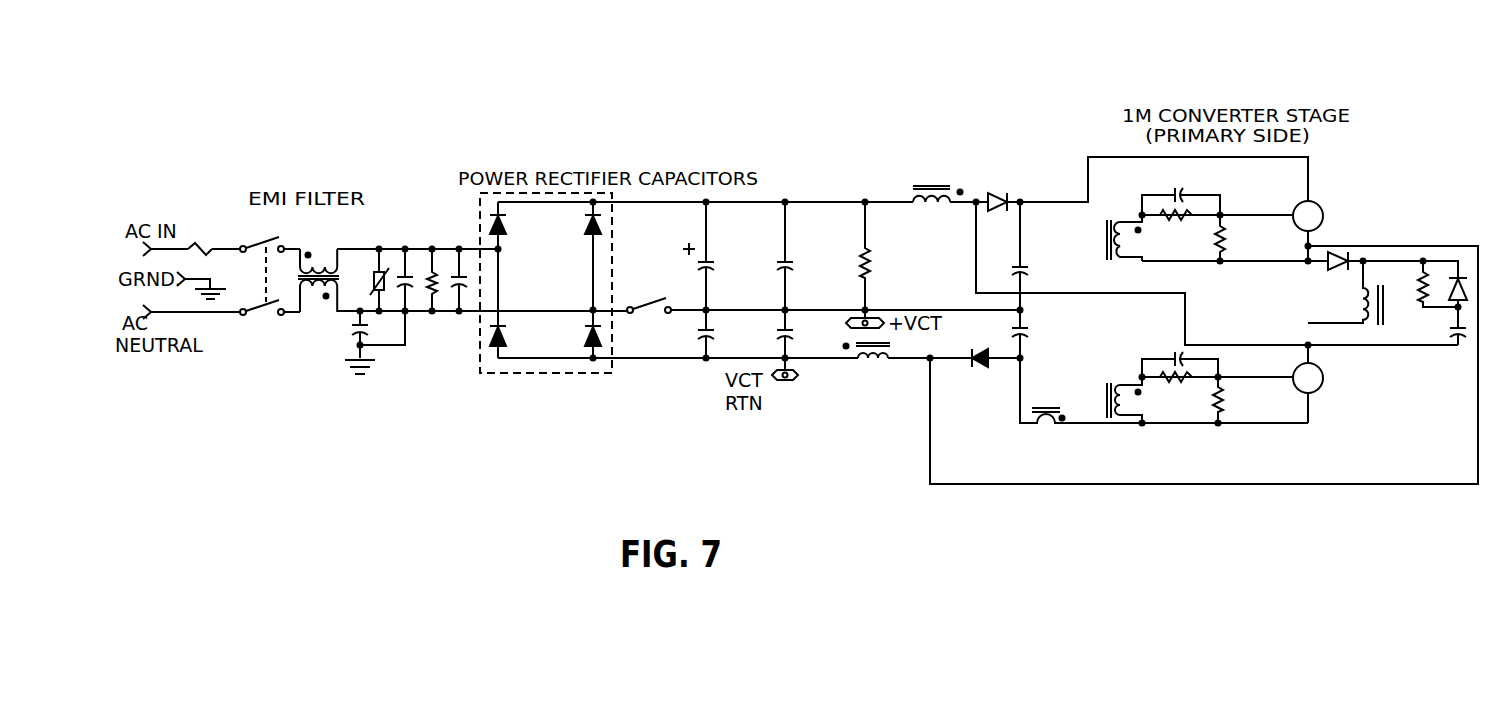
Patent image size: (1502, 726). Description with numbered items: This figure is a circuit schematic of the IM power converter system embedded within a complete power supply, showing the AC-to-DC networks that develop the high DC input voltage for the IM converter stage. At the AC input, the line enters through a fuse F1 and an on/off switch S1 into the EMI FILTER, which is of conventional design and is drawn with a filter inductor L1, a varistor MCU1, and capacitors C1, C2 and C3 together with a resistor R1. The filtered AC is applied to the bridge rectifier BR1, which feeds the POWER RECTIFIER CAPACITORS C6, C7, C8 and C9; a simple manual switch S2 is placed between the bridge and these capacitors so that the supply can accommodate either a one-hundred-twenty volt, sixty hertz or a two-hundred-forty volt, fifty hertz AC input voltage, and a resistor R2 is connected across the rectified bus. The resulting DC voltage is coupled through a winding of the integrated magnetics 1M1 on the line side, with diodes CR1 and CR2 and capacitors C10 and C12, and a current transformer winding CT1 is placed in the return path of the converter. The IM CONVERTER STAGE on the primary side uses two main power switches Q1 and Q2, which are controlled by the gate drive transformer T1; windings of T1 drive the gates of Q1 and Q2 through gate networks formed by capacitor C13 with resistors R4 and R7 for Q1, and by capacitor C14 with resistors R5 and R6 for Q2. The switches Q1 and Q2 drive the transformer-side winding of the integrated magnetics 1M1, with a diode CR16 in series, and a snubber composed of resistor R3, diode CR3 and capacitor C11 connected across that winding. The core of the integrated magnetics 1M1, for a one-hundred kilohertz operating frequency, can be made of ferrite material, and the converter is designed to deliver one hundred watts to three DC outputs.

The fuse F1 is at (203, 259).
The on/off power switch S1 is at (280, 277).
The EMI filter inductor L1 is at (330, 280).
The metal oxide varistor MCU1 is at (373, 284).
The capacitor C1 is at (375, 341).
The capacitor C2 is at (412, 275).
The resistor R1 is at (437, 275).
The capacitor C3 is at (468, 290).
The bridge rectifier BR1 is at (546, 283).
The manual switch S2 is at (660, 317).
The filter capacitor C6 is at (710, 256).
The filter capacitor C7 is at (720, 336).
The filter capacitor C8 is at (800, 256).
The filter capacitor C9 is at (799, 336).
The resistor R2 is at (881, 256).
The integrated magnetics 1M1 is at (1402, 372).
The diode CR1 is at (1004, 185).
The diode CR2 is at (977, 370).
The capacitor C10 is at (1042, 256).
The capacitor C12 is at (1043, 336).
The current transformer winding CT1 is at (1081, 402).
The main IM converter power switch Q1 is at (1302, 220).
The main IM converter power switch Q2 is at (1304, 384).
The gate drive transformer T1 is at (1087, 311).
The capacitor C13 is at (1182, 195).
The resistor R4 is at (1176, 228).
The resistor R7 is at (1236, 238).
The capacitor C14 is at (1177, 357).
The resistor R5 is at (1176, 389).
The resistor R6 is at (1234, 400).
The diode CR16 is at (1326, 268).
The resistor R3 is at (1422, 283).
The diode CR3 is at (1454, 276).
The capacitor C11 is at (1449, 328).